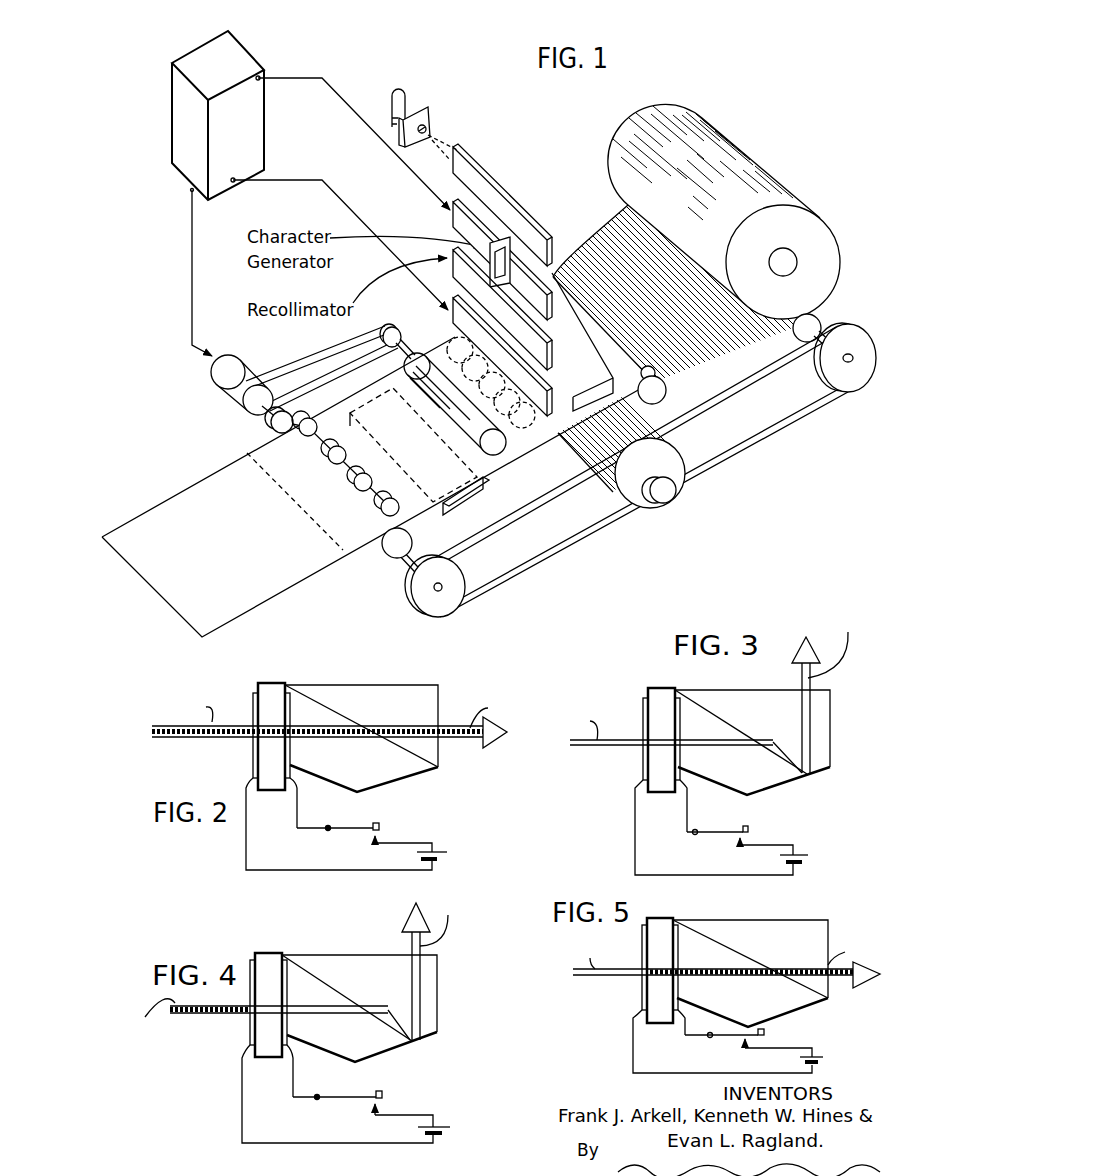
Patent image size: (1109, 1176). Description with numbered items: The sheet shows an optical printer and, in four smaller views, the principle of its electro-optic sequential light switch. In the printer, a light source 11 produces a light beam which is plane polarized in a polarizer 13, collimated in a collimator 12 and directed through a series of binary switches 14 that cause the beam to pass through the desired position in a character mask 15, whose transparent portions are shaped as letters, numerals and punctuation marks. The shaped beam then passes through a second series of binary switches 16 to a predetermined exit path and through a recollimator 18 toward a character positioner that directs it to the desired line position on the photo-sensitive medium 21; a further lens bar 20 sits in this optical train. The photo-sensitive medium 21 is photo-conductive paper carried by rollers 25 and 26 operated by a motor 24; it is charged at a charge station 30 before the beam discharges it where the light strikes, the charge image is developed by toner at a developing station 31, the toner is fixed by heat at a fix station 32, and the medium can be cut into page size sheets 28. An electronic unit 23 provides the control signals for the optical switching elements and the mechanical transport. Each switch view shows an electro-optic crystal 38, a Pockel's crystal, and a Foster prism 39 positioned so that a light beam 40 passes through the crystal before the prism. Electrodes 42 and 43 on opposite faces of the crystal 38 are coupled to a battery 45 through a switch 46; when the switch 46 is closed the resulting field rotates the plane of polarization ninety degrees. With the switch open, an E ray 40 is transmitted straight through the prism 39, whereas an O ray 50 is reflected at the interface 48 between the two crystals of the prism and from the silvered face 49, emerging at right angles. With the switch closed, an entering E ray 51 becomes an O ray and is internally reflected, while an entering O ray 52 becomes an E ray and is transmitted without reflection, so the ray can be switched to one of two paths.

In FIG. 1, the light source 11 is at (392, 103).
In FIG. 1, the collimator 12 is at (495, 180).
In FIG. 1, the polarizer 13 is at (432, 117).
In FIG. 1, the series of binary switches 14 is at (553, 312).
In FIG. 1, the character mask 15 is at (502, 243).
In FIG. 1, the second series of binary switches 16 is at (462, 223).
In FIG. 1, the recollimator 18 is at (453, 280).
In FIG. 1, the focusing lens bar 20 is at (453, 319).
In FIG. 1, the photo-sensitive medium 21 is at (516, 443).
In FIG. 1, the electronic unit 23 is at (233, 48).
In FIG. 1, the motor 24 is at (677, 470).
In FIG. 1, the rollers 25 is at (818, 325).
In FIG. 1, the roller 26 is at (390, 553).
In FIG. 1, the page size sheets 28 is at (272, 578).
In FIG. 1, the charge station 30 is at (580, 427).
In FIG. 1, the developing station 31 is at (493, 452).
In FIG. 1, the fix station 32 is at (450, 508).
In FIG. 2, the electro-optic crystal 38 is at (278, 682).
In FIG. 3, the electro-optic crystal 38 is at (662, 688).
In FIG. 4, the electro-optic crystal 38 is at (262, 953).
In FIG. 5, the electro-optic crystal 38 is at (657, 918).
In FIG. 2, the prism 39 is at (385, 683).
In FIG. 3, the prism 39 is at (737, 688).
In FIG. 4, the prism 39 is at (340, 953).
In FIG. 5, the prism 39 is at (757, 919).
In FIG. 2, the light beam 40 is at (178, 740).
In FIG. 2, the electrode 42 is at (255, 745).
In FIG. 3, the electrode 42 is at (643, 768).
In FIG. 4, the electrode 42 is at (252, 1026).
In FIG. 5, the electrode 42 is at (645, 1003).
In FIG. 2, the electrode 43 is at (292, 745).
In FIG. 3, the electrode 43 is at (680, 752).
In FIG. 4, the electrode 43 is at (287, 1022).
In FIG. 5, the electrode 43 is at (682, 985).
In FIG. 2, the battery 45 is at (438, 851).
In FIG. 3, the battery 45 is at (797, 855).
In FIG. 4, the battery 45 is at (436, 1126).
In FIG. 5, the battery 45 is at (822, 1058).
In FIG. 2, the switch 46 is at (357, 825).
In FIG. 3, the switch 46 is at (721, 832).
In FIG. 4, the switch 46 is at (360, 1096).
In FIG. 5, the switch 46 is at (737, 1038).
In FIG. 2, the interface 48 is at (347, 718).
In FIG. 3, the interface 48 is at (771, 710).
In FIG. 4, the interface 48 is at (345, 990).
In FIG. 5, the interface 48 is at (745, 965).
In FIG. 2, the silvered face 49 is at (414, 775).
In FIG. 3, the silvered face 49 is at (796, 782).
In FIG. 4, the silvered face 49 is at (403, 1045).
In FIG. 5, the silvered face 49 is at (800, 1008).
In FIG. 3, the O ray 50 is at (603, 745).
In FIG. 4, the E ray 51 is at (189, 1016).
In FIG. 5, the O ray 52 is at (618, 977).